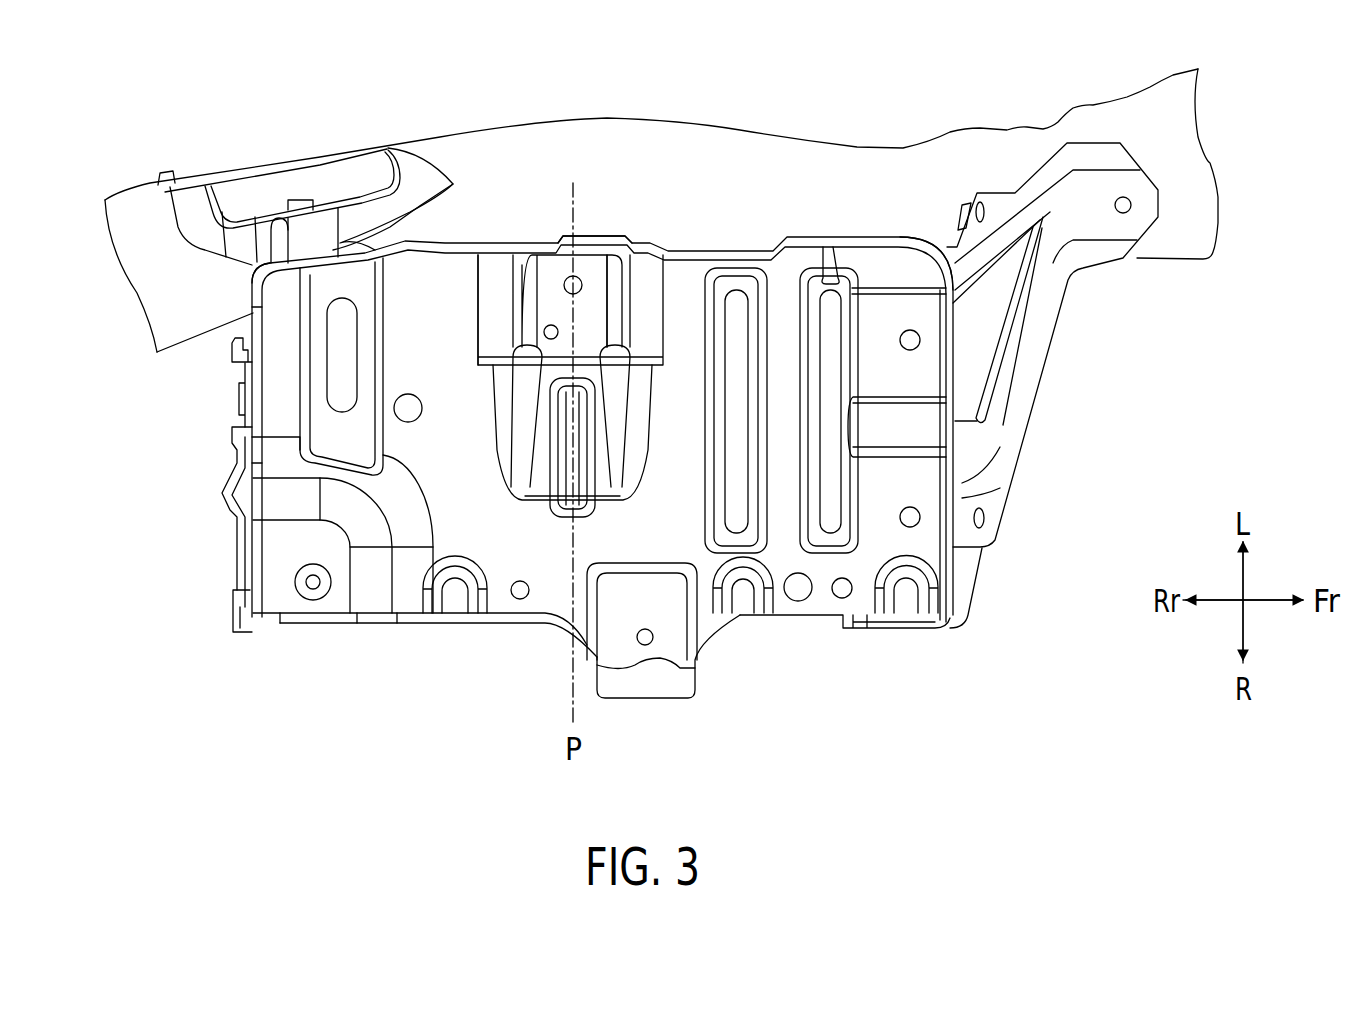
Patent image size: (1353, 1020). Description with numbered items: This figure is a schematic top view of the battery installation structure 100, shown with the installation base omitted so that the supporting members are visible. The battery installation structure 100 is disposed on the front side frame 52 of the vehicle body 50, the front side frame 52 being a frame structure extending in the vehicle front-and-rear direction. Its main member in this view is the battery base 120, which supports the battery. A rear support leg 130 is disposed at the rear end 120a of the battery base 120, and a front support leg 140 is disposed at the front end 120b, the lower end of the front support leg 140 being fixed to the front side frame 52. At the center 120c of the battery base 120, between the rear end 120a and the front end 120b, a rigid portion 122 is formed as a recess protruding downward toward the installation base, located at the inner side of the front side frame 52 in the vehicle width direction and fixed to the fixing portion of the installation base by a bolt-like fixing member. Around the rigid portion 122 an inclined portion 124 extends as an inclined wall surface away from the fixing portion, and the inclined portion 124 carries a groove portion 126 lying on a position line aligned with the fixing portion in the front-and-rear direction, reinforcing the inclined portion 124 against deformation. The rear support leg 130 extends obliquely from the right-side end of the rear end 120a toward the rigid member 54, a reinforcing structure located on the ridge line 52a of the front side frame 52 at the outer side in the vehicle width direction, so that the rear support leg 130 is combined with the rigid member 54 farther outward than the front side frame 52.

The vehicle body 50 is at (137, 105).
The front side frame 52 is at (130, 212).
The ridge line 52a is at (188, 336).
The rigid member 54 is at (192, 196).
The battery installation structure 100 is at (1062, 461).
The battery base 120 is at (924, 544).
The rear end 120a is at (265, 264).
The front end 120b is at (934, 237).
The center 120c is at (562, 220).
The rigid portion 122 is at (589, 303).
The inclined portion 124 is at (499, 286).
The groove portion 126 is at (565, 494).
The rear support leg 130 is at (313, 233).
The front support leg 140 is at (1042, 348).